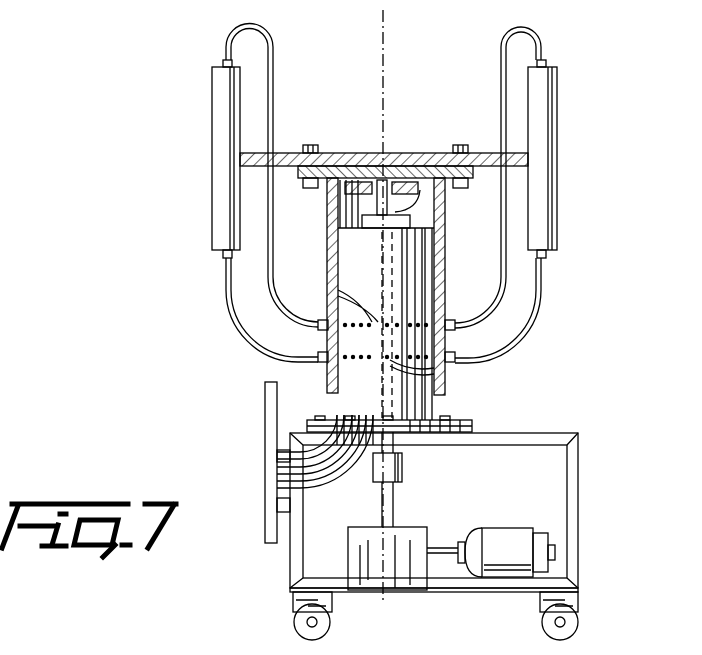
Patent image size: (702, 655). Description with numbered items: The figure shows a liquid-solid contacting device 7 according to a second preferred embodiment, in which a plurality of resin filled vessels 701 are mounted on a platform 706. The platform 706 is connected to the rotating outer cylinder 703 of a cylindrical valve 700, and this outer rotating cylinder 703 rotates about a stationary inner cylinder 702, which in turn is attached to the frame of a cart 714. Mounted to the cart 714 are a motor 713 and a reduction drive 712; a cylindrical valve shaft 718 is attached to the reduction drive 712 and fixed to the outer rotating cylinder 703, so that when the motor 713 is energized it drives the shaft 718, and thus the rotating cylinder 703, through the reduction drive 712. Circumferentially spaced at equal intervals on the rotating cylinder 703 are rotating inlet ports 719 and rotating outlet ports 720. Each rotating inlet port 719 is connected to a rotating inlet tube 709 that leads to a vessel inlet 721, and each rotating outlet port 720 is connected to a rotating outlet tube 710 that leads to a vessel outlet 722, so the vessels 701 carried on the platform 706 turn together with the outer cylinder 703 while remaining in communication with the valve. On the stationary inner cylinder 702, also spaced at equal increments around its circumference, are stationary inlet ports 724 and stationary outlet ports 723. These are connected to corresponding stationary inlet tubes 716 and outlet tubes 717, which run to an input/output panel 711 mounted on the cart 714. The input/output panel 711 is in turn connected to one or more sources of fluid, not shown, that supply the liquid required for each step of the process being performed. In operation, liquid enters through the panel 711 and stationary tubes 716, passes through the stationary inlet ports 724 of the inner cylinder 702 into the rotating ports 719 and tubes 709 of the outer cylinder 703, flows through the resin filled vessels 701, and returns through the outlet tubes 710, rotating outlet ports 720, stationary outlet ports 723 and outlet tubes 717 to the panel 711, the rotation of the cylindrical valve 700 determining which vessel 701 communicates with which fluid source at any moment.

The liquid-solid contacting device 7 is at (165, 138).
The cylindrical valve 700 is at (428, 272).
The resin filled vessels 701 is at (558, 98).
The stationary inner cylinder 702 is at (446, 394).
The rotating outer cylinder 703 is at (446, 214).
The platform 706 is at (520, 153).
The rotating inlet tubes 709 is at (274, 57).
The rotating outlet tubes 710 is at (234, 318).
The input/output panel 711 is at (265, 420).
The reduction drive 712 is at (430, 530).
The motor 713 is at (545, 535).
The cart 714 is at (580, 570).
The stationary inlet tubes 716 is at (320, 478).
The stationary outlet tubes 717 is at (305, 500).
The cylindrical valve shaft 718 is at (424, 176).
The rotating inlet ports 719 is at (319, 322).
The rotating outlet ports 720 is at (319, 355).
The vessel inlet 721 is at (222, 62).
The vessel outlet 722 is at (224, 256).
The stationary outlet ports 723 is at (455, 358).
The stationary inlet ports 724 is at (326, 281).